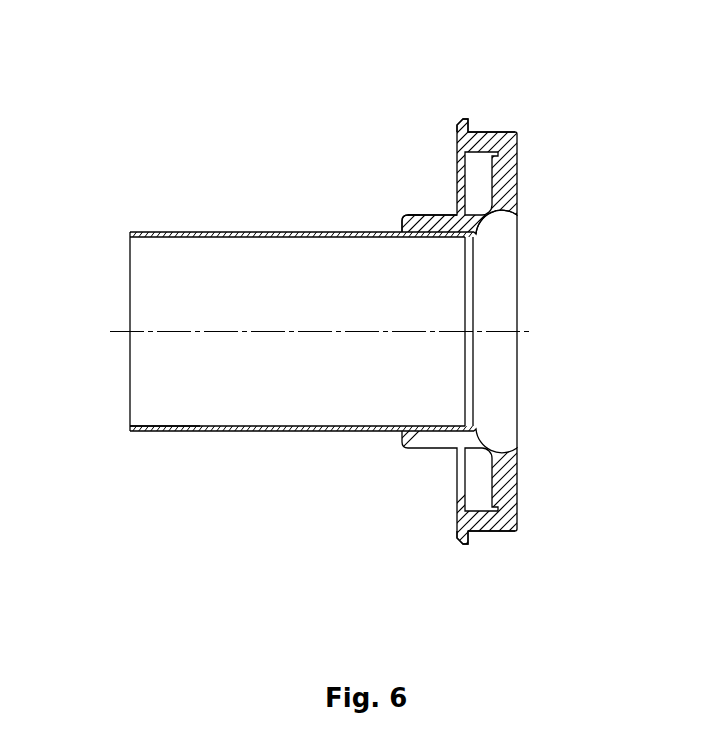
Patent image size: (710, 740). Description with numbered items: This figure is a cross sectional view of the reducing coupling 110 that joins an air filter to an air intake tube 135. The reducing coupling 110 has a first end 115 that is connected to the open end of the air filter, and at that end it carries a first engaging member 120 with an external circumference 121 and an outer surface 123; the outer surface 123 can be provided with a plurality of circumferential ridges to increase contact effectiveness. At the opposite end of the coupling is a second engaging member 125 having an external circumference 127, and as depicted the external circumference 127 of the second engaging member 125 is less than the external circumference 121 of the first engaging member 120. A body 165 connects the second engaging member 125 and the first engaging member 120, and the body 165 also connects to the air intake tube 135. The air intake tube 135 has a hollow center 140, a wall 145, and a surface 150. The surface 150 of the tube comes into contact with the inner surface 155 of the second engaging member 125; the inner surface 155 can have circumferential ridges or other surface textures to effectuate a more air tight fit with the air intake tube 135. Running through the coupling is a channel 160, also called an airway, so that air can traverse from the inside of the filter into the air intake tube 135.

The reducing coupling 110 is at (410, 80).
The first end 115 is at (405, 555).
The first engaging member 120 is at (355, 371).
The external circumference 121 is at (553, 80).
The outer surface 123 is at (533, 555).
The second engaging member 125 is at (353, 182).
The external circumference 127 is at (380, 156).
The air intake tube 135 is at (122, 462).
The hollow center 140 is at (242, 331).
The wall 145 is at (302, 463).
The surface 150 is at (298, 170).
The inner surface 155 is at (557, 256).
The channel 160 is at (578, 331).
The body 165 is at (424, 484).